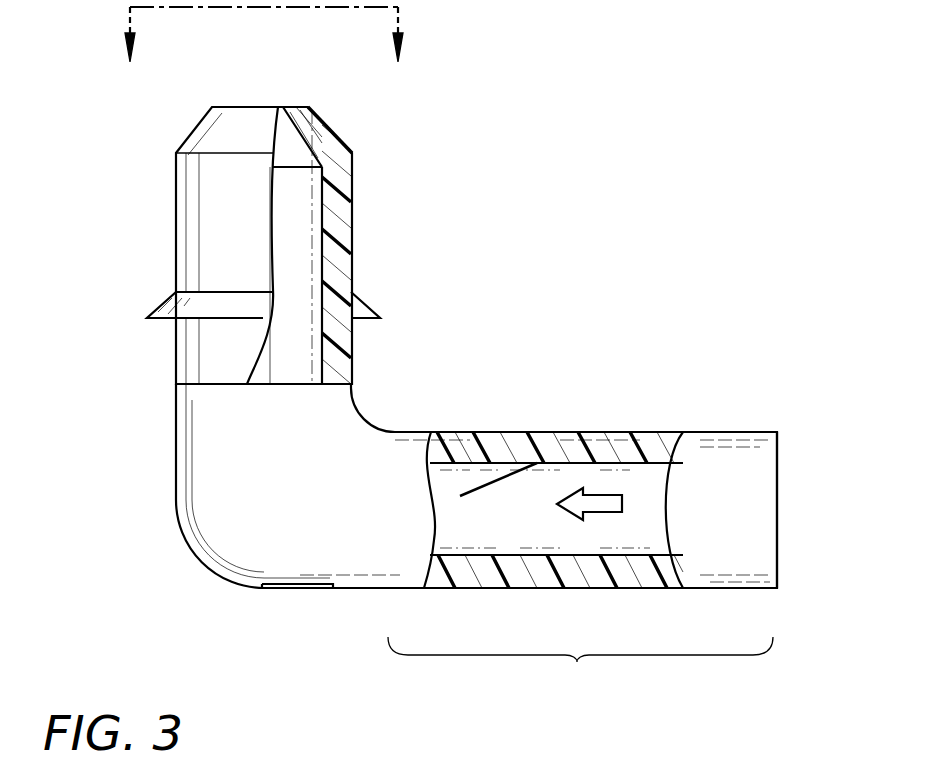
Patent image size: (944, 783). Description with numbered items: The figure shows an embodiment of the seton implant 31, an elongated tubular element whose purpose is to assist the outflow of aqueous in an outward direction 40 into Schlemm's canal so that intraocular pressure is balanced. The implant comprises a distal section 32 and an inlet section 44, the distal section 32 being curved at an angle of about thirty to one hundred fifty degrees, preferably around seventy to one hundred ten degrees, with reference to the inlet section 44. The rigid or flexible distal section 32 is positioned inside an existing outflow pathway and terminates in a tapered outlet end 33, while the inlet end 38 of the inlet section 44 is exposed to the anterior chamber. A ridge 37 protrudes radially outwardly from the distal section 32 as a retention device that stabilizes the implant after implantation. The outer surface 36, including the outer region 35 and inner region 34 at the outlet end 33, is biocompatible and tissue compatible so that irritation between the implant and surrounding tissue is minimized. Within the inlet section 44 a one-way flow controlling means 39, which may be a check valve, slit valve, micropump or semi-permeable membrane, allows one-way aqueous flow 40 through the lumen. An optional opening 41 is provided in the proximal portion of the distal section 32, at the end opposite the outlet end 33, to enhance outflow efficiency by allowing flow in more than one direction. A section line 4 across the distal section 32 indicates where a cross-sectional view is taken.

The section line 4- 4 is at (265, 34).
The seton implant 31 is at (538, 405).
The distal section 32 is at (377, 282).
The outlet end 33 is at (266, 107).
The inner region 34 is at (286, 100).
The outer region 35 is at (320, 107).
The outer surface 36 is at (352, 153).
The ridge 37 is at (172, 318).
The inlet end 38 is at (777, 460).
The one-way flow controlling means 39 is at (479, 492).
The outward direction 40 is at (593, 512).
The opening 41 is at (292, 588).
The inlet section 44 is at (580, 665).